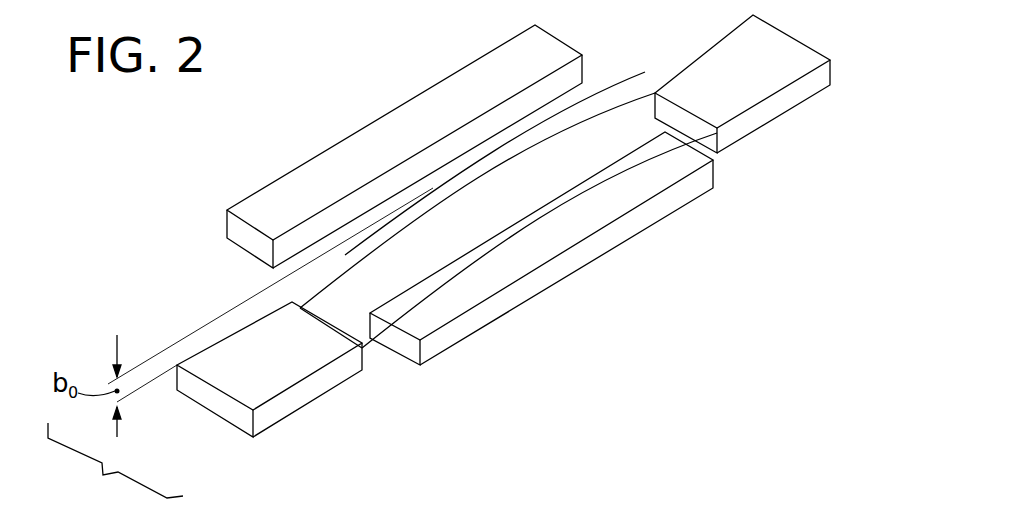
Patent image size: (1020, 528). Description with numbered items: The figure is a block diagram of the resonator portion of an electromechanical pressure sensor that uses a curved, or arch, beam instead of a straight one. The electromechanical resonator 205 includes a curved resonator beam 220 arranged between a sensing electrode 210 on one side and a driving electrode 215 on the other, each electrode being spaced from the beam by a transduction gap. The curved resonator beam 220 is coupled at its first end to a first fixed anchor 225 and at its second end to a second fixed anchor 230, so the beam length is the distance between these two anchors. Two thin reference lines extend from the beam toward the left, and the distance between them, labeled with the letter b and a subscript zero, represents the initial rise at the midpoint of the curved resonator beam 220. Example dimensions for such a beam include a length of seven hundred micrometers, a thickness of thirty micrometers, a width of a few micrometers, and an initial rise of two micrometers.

The electromechanical resonator 205 is at (114, 469).
The sensing electrode 210 is at (447, 98).
The driving electrode 215 is at (528, 252).
The curved resonator beam 220 is at (560, 125).
The first fixed anchor 225 is at (737, 86).
The second fixed anchor 230 is at (273, 375).